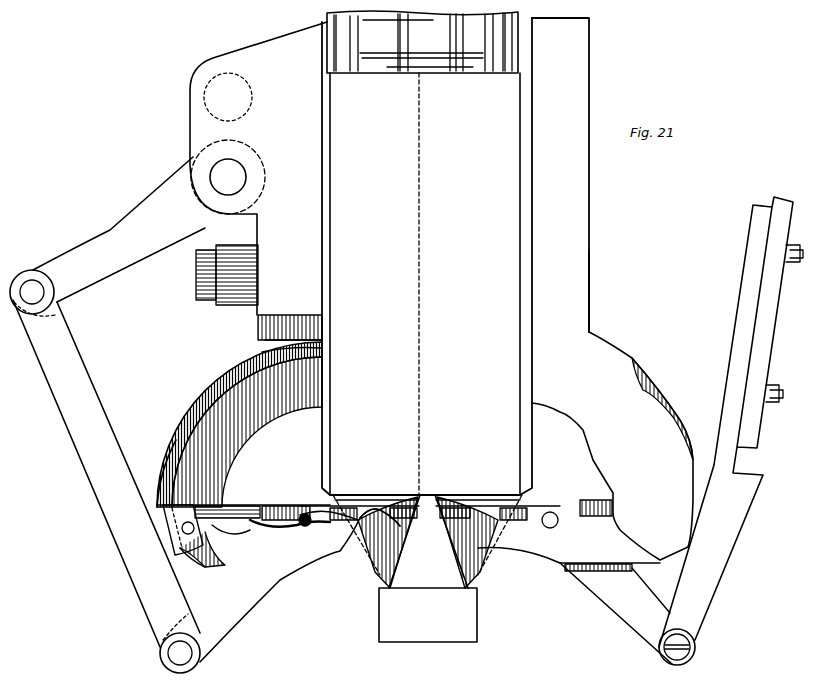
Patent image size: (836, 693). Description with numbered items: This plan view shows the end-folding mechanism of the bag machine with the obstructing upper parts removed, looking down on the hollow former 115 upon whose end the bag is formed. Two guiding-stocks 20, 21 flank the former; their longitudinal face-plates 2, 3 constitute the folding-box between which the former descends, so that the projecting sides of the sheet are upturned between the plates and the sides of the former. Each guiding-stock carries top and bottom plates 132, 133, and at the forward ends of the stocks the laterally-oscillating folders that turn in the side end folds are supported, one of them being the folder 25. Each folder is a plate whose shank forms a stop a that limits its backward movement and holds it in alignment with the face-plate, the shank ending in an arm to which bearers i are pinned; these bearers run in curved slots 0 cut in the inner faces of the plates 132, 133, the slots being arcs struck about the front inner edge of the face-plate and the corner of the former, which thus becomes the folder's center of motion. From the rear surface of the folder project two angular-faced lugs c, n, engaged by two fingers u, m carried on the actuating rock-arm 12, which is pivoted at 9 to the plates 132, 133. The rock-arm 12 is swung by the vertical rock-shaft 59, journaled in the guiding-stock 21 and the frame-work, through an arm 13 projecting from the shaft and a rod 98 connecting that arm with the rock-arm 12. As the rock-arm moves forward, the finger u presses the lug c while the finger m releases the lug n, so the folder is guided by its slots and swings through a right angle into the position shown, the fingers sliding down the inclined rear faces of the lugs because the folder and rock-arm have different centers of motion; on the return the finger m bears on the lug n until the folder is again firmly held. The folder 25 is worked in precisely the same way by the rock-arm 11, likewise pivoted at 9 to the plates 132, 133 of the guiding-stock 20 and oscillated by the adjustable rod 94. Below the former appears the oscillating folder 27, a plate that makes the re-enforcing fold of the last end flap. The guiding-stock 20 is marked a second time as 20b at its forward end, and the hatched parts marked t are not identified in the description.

The hollow former 115 is at (422, 42).
The longitudinal face-plate 2 is at (322, 216).
The longitudinal face-plate 3 is at (532, 222).
The vertical rock-shaft 59 is at (258, 168).
The guiding-stock 21 is at (258, 328).
The arm 13 is at (107, 236).
The rod 98 is at (106, 486).
The bottom plate 133 is at (239, 423).
The curved slot 0 is at (178, 456).
The angular-faced lug c is at (243, 511).
The bearer i is at (183, 529).
The stop a is at (286, 512).
The finger m is at (215, 546).
The angular-faced lug n is at (290, 528).
The actuating rock-arm 12 is at (426, 586).
The pivot 9 is at (565, 526).
The guiding-stock 20b is at (359, 506).
The folder 25 is at (498, 506).
The wedge t is at (428, 542).
The finger u is at (380, 518).
The oscillating folder 27 is at (428, 568).
The top plate 132 is at (612, 446).
The guiding-stock 20 is at (589, 308).
The rock-arm 11 is at (627, 614).
The adjustable rod 94 is at (731, 422).